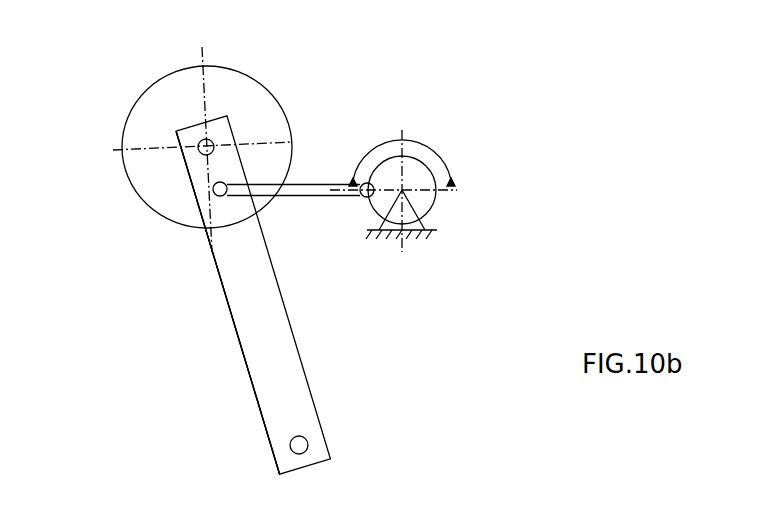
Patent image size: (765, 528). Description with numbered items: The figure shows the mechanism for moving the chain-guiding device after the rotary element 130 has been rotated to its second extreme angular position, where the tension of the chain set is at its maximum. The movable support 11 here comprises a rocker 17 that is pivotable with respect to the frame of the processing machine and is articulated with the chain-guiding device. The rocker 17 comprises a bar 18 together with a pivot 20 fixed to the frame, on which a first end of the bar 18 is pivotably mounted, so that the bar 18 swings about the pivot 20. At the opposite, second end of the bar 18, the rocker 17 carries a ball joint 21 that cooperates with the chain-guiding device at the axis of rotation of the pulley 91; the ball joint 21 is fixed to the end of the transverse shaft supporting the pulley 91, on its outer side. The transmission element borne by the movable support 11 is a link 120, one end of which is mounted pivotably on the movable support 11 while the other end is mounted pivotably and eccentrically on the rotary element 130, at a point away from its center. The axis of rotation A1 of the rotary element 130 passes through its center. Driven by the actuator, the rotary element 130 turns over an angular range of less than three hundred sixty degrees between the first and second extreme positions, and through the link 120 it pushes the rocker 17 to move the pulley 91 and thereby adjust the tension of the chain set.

The movable support 11 is at (203, 419).
The rocker 17 is at (226, 326).
The bar 18 is at (237, 348).
The pulley 91 is at (148, 125).
The ball joint 21 is at (199, 150).
The pivot 20 is at (290, 445).
The link 120 is at (312, 182).
The rotary element 130 is at (413, 177).
The axis of rotation A1 is at (407, 195).